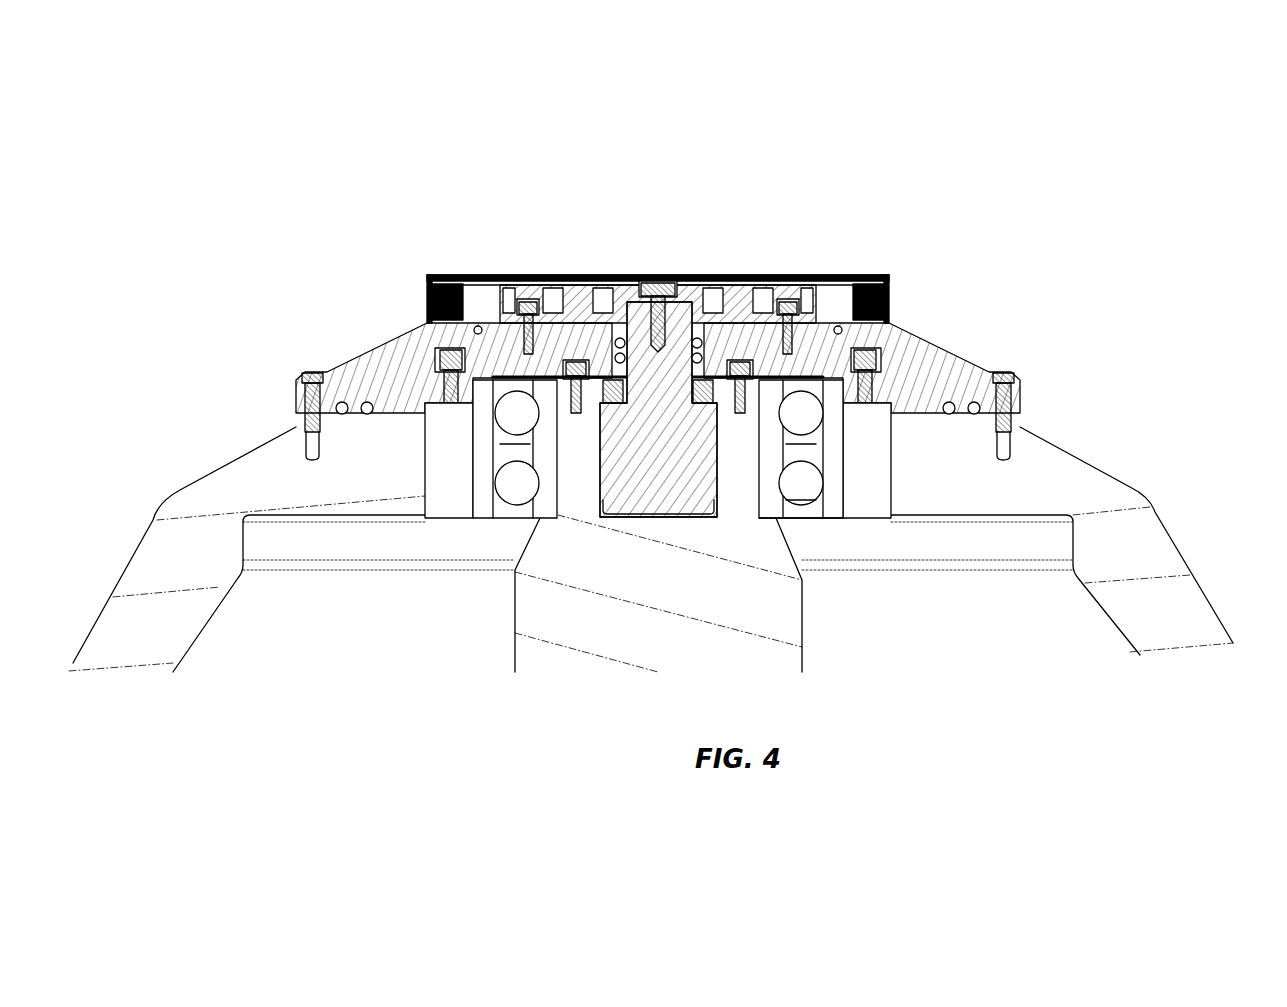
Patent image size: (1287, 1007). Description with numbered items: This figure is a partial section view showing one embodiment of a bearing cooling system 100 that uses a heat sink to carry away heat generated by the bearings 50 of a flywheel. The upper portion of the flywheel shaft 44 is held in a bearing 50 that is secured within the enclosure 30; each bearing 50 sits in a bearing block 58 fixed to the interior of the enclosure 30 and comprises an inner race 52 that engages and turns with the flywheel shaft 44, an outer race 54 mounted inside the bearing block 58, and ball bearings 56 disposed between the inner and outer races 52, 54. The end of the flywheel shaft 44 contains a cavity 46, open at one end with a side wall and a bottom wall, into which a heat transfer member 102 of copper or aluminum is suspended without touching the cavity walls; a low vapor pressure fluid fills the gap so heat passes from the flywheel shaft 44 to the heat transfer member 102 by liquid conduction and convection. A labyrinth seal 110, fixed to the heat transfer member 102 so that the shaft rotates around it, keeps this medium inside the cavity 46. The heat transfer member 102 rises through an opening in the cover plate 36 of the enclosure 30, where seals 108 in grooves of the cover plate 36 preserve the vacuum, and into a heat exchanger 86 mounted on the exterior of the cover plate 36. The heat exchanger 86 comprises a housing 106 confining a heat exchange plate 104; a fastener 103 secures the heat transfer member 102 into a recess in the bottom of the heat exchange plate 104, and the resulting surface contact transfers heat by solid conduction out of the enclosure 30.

The enclosure 30 is at (667, 522).
The cover plate 36 is at (700, 347).
The flywheel shaft 44 is at (732, 455).
The cavity 46 is at (677, 512).
The bearing 50 is at (498, 540).
The inner race 52 is at (555, 448).
The outer race 54 is at (833, 498).
The ball bearings 56 is at (633, 438).
The bearing block 58 is at (440, 468).
The heat exchanger 86 is at (634, 271).
The bearing cooling system 100 is at (635, 382).
The heat transfer member 102 is at (707, 424).
The fastener 103 is at (672, 278).
The heat exchange plate 104 is at (580, 278).
The housing 106 is at (515, 275).
The seals 108 is at (697, 340).
The labyrinth seal 110 is at (733, 360).